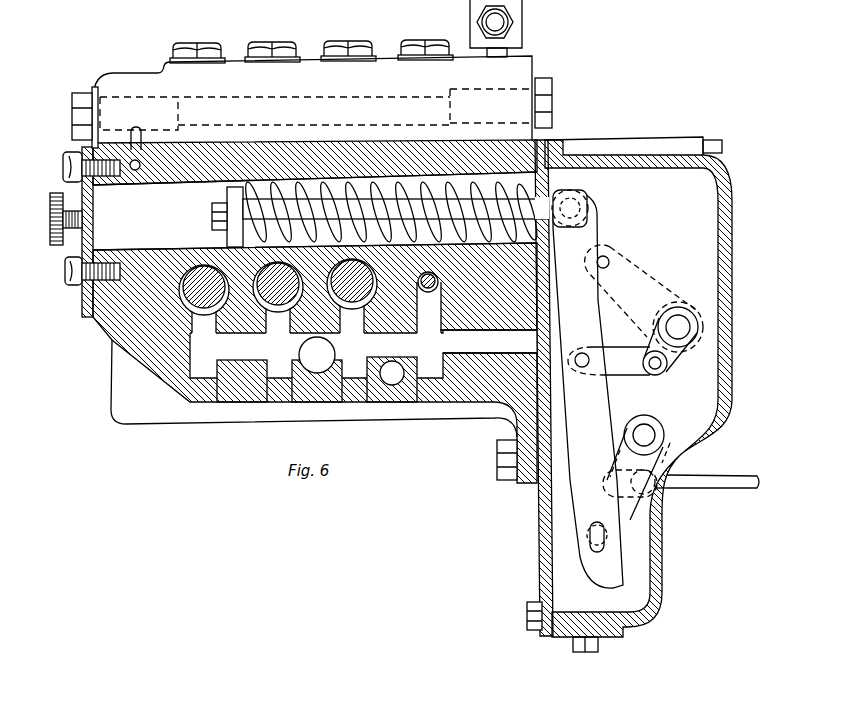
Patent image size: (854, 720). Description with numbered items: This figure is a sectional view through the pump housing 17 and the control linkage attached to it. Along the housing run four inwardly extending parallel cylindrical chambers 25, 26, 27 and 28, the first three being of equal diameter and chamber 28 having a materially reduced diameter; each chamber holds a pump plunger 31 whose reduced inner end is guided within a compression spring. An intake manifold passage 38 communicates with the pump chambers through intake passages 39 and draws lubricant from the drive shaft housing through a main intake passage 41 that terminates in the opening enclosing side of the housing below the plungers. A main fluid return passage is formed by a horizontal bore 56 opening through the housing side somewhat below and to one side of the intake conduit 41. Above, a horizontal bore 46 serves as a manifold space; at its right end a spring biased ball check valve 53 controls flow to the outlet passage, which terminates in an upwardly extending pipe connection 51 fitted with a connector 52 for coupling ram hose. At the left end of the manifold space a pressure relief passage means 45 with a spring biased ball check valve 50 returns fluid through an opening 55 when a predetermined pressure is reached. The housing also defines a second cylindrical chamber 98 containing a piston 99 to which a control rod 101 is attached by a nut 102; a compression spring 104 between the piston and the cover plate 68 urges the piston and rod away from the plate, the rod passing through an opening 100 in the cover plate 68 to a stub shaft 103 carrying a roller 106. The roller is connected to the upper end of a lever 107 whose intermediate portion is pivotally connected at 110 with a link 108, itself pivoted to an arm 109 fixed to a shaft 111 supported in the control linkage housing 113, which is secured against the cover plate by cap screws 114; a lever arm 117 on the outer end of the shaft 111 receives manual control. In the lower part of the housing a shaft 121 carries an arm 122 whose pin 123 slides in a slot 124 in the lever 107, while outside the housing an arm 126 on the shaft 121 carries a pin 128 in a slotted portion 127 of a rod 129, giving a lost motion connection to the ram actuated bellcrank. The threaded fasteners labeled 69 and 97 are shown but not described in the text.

The pump housing 17 is at (97, 328).
The cylindrical chamber 25 is at (179, 292).
The cylindrical chamber 26 is at (258, 296).
The cylindrical chamber 27 is at (330, 294).
The cylindrical chamber 28 is at (421, 278).
The pump plunger 31 is at (222, 279).
The intake manifold passage 38 is at (503, 350).
The intake passage 39 is at (206, 330).
The main intake passage 41 is at (299, 350).
The pressure relief passage means 45 is at (141, 163).
The horizontal bore 46 is at (300, 99).
The spring biased ball check valve 50 is at (158, 99).
The pipe connection 51 is at (523, 34).
The connector 52 is at (520, 12).
The spring biased ball check valve 53 is at (463, 93).
The opening 55 is at (135, 171).
The horizontal bore 56 is at (392, 361).
The cover plate 68 is at (538, 513).
The screw 69 is at (81, 287).
The adjusting knob 97 is at (48, 205).
The second cylindrical chamber 98 is at (148, 251).
The piston 99 is at (226, 192).
The opening 100 is at (560, 192).
The control rod 101 is at (373, 188).
The nut 102 is at (212, 217).
The stub shaft 103 is at (586, 196).
The compression spring 104 is at (243, 236).
The roller 106 is at (589, 212).
The lever 107 is at (604, 255).
The link 108 is at (622, 351).
The arm 109 is at (666, 368).
The pivotal connection 110 is at (581, 352).
The shaft 111 is at (681, 318).
The control linkage housing 113 is at (731, 246).
The cap screw 114 is at (527, 610).
The lever arm 117 is at (638, 268).
The shaft 121 is at (650, 427).
The arm 122 is at (636, 510).
The pin 123 is at (597, 552).
The slot 124 is at (590, 522).
The arm 126 is at (663, 455).
The slotted portion 127 is at (606, 480).
The pin 128 is at (661, 492).
The rod 129 is at (740, 470).